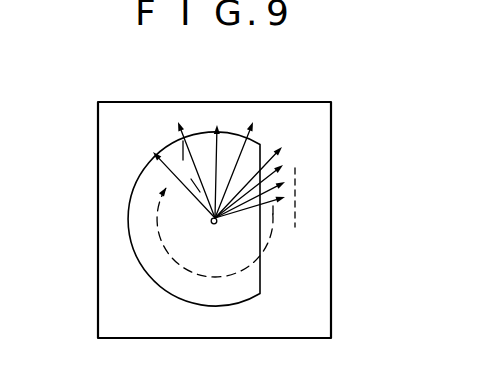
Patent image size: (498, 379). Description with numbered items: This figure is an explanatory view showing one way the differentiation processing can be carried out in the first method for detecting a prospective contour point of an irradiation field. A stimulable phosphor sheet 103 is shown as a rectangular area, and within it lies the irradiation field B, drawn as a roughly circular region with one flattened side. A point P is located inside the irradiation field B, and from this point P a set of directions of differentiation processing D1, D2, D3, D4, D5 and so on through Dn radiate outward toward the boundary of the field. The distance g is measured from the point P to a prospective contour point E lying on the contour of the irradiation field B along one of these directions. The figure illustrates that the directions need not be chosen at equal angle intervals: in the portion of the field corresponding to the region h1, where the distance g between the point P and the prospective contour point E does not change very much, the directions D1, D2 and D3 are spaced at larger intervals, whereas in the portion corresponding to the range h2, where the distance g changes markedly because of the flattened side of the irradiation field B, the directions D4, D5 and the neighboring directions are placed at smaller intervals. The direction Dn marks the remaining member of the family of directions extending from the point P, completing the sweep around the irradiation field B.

The stimulable phosphor sheet 103 is at (308, 101).
The irradiation field B is at (233, 305).
The point inside of the irradiation field P is at (214, 224).
The direction of differentiation processing Dn is at (166, 162).
The direction of differentiation processing D1 is at (183, 162).
The direction of differentiation processing D2 is at (205, 162).
The direction of differentiation processing D3 is at (248, 162).
The direction of differentiation processing D4 is at (262, 173).
The direction of differentiation processing D5 is at (262, 185).
The prospective contour point E is at (186, 140).
The distance g is at (189, 166).
The region h1 is at (258, 100).
The range h2 is at (312, 132).